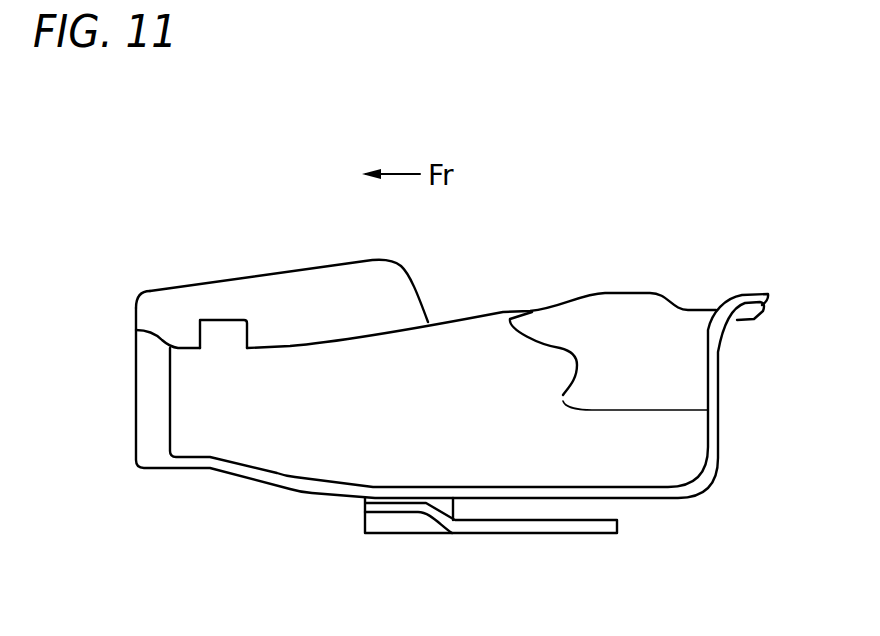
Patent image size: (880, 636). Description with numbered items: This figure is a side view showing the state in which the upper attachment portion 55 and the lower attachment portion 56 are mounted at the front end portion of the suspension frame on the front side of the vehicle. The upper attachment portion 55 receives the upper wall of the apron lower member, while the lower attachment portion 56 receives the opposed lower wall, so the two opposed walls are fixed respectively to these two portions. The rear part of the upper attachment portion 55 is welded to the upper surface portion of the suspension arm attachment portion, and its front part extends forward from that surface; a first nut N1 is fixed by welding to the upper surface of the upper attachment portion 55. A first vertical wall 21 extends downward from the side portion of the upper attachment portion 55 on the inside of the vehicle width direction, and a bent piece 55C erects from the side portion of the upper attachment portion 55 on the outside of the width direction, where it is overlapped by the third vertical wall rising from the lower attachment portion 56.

The first vertical wall 21 is at (287, 448).
The upper attachment portion 55 is at (453, 342).
The bent piece 55C is at (333, 280).
The first nut N1 is at (227, 327).
The lower attachment portion 56 is at (513, 533).